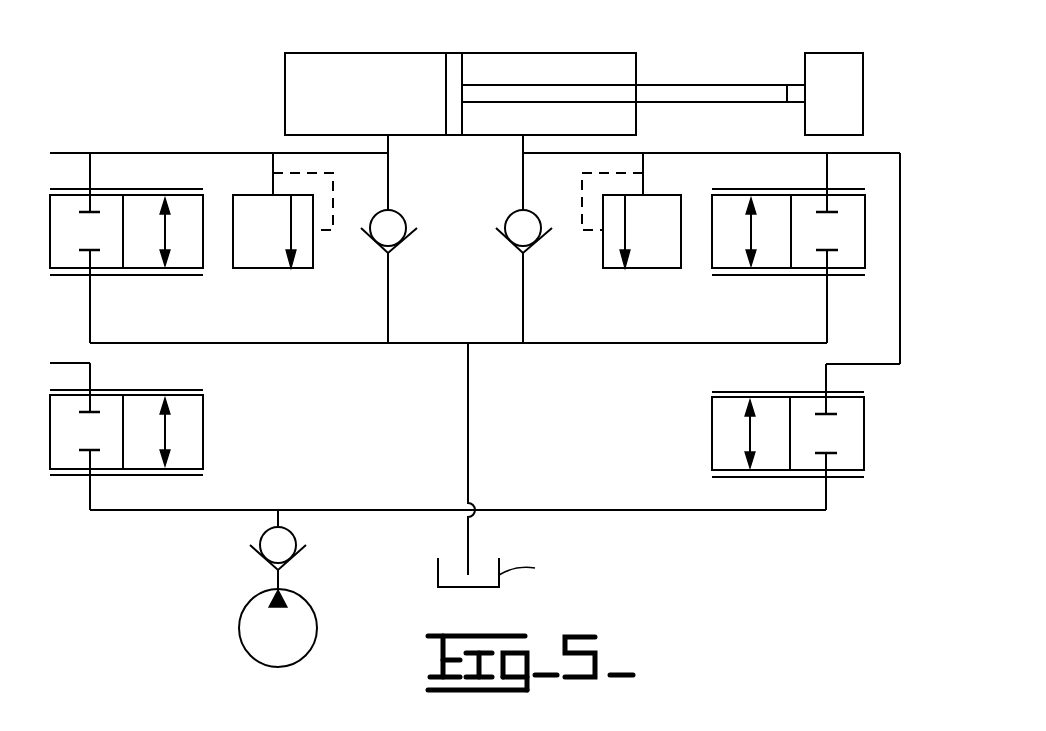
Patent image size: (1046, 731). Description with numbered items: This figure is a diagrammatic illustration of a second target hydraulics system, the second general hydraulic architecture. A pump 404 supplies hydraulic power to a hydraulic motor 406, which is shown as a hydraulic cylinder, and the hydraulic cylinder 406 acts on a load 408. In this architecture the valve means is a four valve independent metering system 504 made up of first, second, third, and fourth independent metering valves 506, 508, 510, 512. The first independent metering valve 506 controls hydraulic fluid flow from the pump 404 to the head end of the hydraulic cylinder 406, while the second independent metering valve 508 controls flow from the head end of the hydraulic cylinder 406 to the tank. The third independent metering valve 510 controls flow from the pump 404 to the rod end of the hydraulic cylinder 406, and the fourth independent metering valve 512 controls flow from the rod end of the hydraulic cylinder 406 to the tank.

The pump 404 is at (240, 623).
The hydraulic motor 406 is at (332, 55).
The load 408 is at (835, 55).
The four valve independent metering system 504 is at (614, 555).
The first independent metering valve 506 is at (205, 432).
The second independent metering valve 508 is at (155, 276).
The third independent metering valve 510 is at (712, 440).
The fourth independent metering valve 512 is at (773, 276).